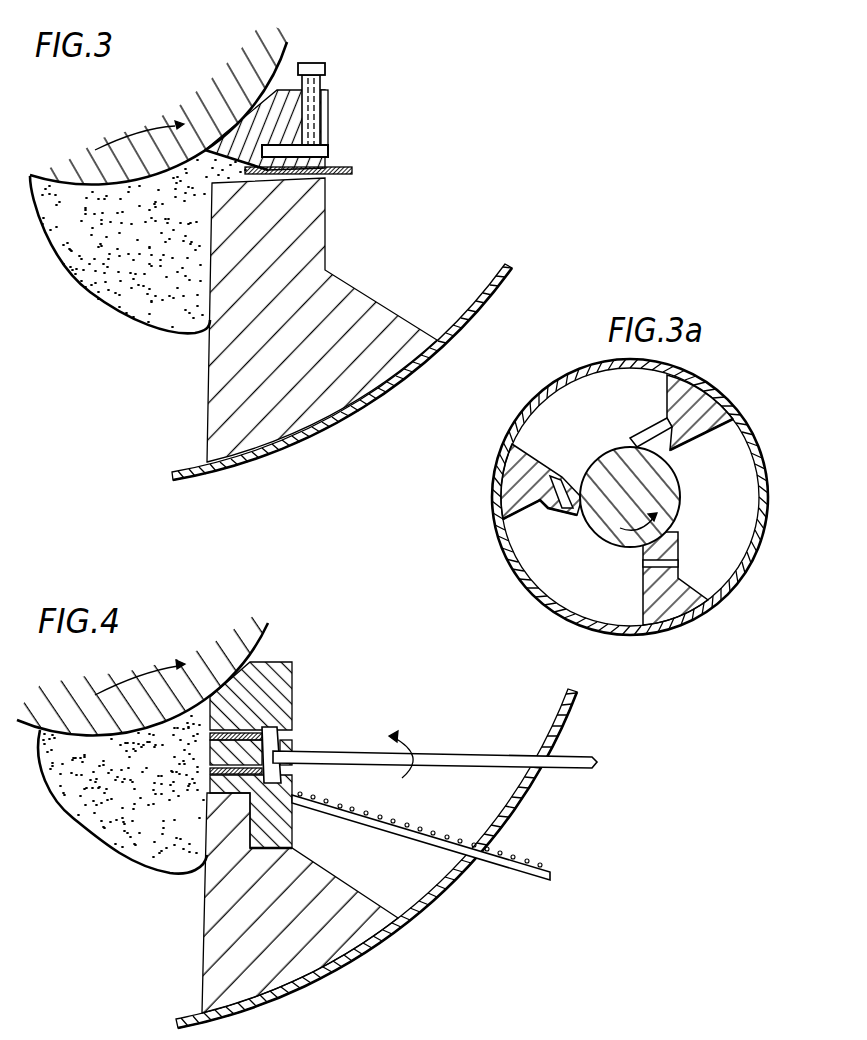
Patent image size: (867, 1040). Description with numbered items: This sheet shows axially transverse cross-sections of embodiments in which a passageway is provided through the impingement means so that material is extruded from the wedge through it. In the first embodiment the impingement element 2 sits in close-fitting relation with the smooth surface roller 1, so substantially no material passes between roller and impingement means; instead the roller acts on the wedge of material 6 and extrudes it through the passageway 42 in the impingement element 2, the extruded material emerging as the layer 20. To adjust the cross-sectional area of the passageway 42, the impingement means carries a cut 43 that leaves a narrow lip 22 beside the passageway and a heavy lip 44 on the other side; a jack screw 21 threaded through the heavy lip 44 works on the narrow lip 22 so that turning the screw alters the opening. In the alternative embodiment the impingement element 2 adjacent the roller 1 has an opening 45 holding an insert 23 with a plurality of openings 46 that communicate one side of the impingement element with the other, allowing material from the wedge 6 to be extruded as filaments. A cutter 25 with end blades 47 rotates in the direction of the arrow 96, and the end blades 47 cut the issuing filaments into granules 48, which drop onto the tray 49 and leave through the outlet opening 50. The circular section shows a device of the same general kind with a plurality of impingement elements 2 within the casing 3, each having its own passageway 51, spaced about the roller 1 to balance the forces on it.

In FIG. 3, the smooth surface roller 1 is at (242, 72).
In FIG. 3A, the smooth surface roller 1 is at (655, 497).
In FIG. 4, the smooth surface roller 1 is at (236, 650).
In FIG. 3, the impingement element 2 is at (220, 375).
In FIG. 3A, the impingement element 2 is at (700, 400).
In FIG. 4, the impingement element 2 is at (225, 927).
In FIG. 3, the casing 3 is at (490, 292).
In FIG. 3A, the casing 3 is at (508, 560).
In FIG. 4, the casing 3 is at (570, 722).
In FIG. 3, the wedge of material 6 is at (94, 272).
In FIG. 4, the wedge of material 6 is at (95, 826).
In FIG. 3, the layer 20 is at (333, 174).
In FIG. 3, the jack screw 21 is at (314, 84).
In FIG. 3, the narrow lip 22 is at (325, 166).
In FIG. 4, the insert 23 is at (283, 820).
In FIG. 4, the cutter 25 is at (433, 750).
In FIG. 3, the passageway 42 is at (296, 178).
In FIG. 3, the cut 43 is at (329, 148).
In FIG. 3, the heavy lip 44 is at (329, 108).
In FIG. 4, the opening 45 is at (232, 706).
In FIG. 4, the openings 46 is at (242, 768).
In FIG. 4, the end blades 47 is at (268, 738).
In FIG. 4, the granules 48 is at (468, 845).
In FIG. 4, the tray 49 is at (488, 863).
In FIG. 4, the outlet opening 50 is at (520, 812).
In FIG. 3A, the passageway 51 is at (656, 428).
In FIG. 4, the arrow 96 is at (398, 772).